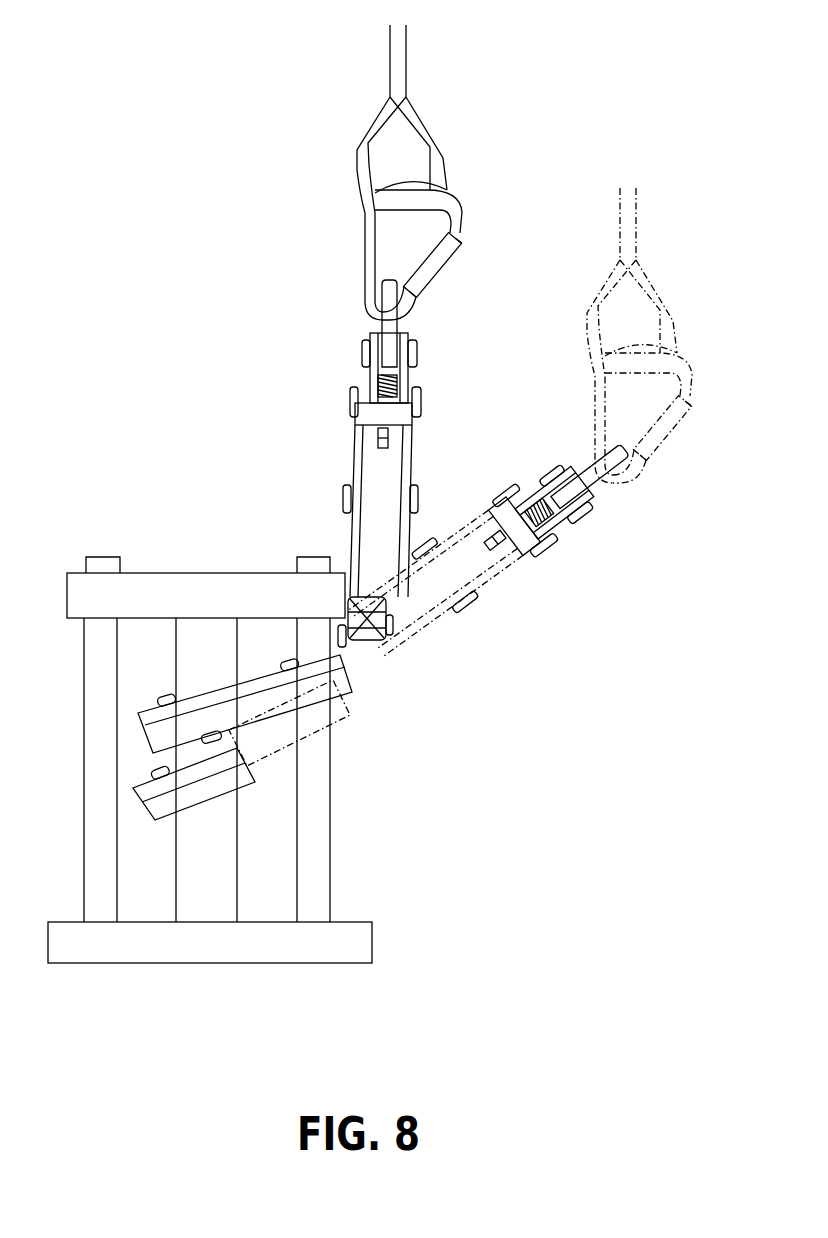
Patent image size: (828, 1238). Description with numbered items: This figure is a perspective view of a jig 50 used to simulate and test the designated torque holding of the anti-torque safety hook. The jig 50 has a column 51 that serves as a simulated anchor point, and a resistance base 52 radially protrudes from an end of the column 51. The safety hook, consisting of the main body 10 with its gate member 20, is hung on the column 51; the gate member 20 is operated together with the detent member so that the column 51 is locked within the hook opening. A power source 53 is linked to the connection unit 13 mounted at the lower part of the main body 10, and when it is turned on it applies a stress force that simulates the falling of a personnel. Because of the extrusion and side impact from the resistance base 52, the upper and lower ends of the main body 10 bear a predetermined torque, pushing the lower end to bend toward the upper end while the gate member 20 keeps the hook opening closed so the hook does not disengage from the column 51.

The main body 10 is at (330, 718).
The connection unit 13 is at (366, 315).
The gate member 20 is at (332, 456).
The jig 50 is at (260, 698).
The column 51 is at (217, 868).
The resistance base 52 is at (137, 575).
The power source 53 is at (388, 72).